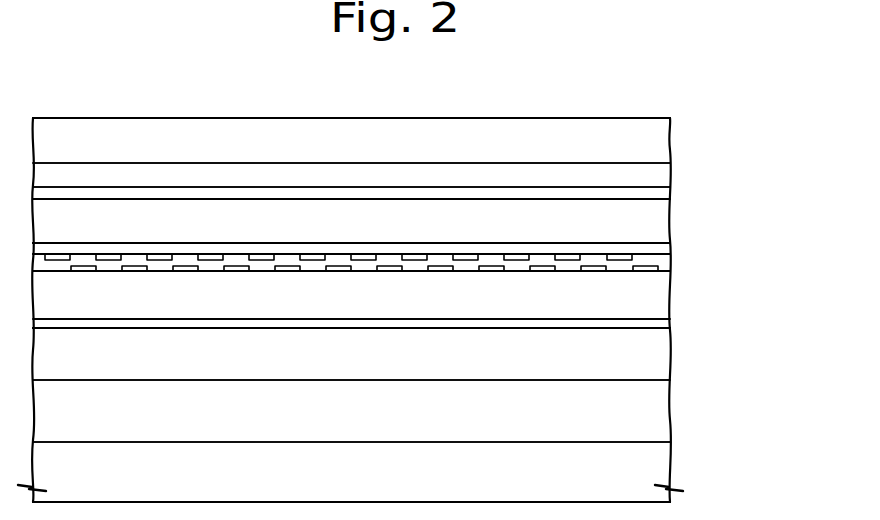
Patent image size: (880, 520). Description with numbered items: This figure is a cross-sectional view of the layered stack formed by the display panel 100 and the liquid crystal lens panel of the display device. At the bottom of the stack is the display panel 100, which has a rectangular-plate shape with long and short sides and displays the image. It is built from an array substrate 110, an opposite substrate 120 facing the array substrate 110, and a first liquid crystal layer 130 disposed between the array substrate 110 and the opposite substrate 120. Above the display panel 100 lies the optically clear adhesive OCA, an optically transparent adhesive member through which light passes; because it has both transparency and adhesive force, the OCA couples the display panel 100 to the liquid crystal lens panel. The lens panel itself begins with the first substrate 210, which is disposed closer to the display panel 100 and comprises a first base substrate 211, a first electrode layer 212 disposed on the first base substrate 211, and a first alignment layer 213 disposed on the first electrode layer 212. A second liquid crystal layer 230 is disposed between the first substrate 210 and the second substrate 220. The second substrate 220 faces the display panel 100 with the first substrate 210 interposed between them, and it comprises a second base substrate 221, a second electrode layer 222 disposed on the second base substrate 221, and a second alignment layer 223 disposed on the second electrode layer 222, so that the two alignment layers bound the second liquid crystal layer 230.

The second base substrate 221 is at (655, 138).
The second electrode layer 222 is at (655, 172).
The second alignment layer 223 is at (655, 192).
The second substrate 220 is at (748, 120).
The second liquid crystal layer 230 is at (658, 222).
The first alignment layer 213 is at (657, 248).
The first electrode layer 212 is at (657, 262).
The first base substrate 211 is at (657, 297).
The first substrate 210 is at (748, 237).
The optically clear adhesive OCA is at (657, 323).
The opposite substrate 120 is at (655, 353).
The first liquid crystal layer 130 is at (658, 410).
The array substrate 110 is at (655, 462).
The display panel 100 is at (748, 343).